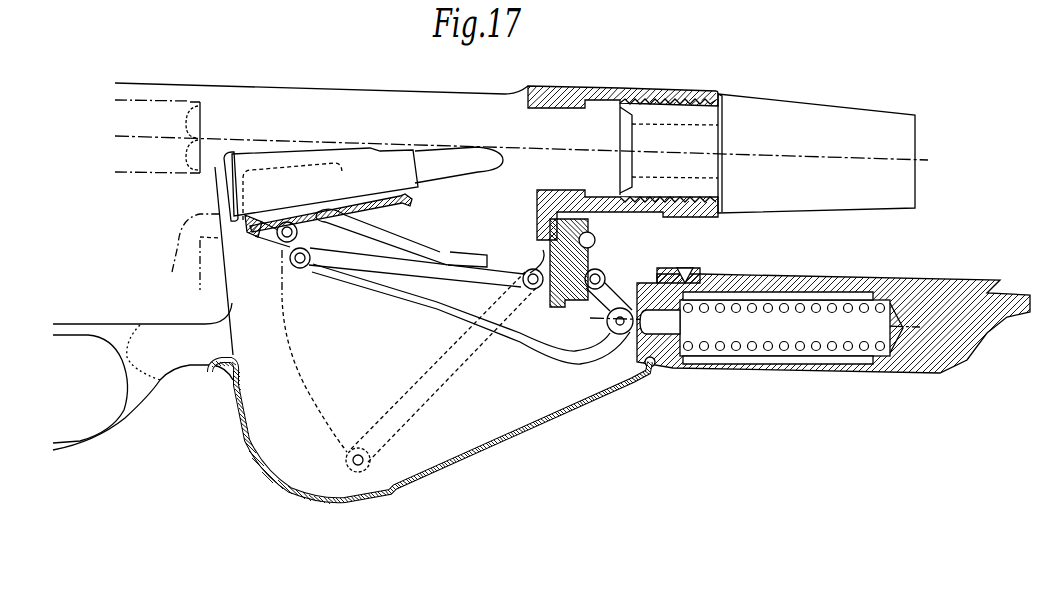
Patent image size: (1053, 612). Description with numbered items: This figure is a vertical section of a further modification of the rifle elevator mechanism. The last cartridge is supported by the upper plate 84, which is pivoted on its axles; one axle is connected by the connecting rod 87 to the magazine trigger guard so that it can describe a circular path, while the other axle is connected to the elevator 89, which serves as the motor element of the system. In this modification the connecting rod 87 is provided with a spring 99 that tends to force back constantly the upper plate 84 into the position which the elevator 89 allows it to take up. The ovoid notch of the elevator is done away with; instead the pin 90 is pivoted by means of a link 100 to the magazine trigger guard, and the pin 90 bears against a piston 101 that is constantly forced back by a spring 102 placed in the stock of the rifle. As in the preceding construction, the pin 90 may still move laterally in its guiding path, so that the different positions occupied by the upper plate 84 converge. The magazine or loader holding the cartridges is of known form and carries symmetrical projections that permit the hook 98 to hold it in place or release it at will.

The plate 84 is at (356, 202).
The connecting rod 87 is at (448, 265).
The elevator 89 is at (408, 300).
The pin 90 is at (618, 328).
The hook 98 is at (205, 233).
The spring 99 is at (407, 240).
The link 100 is at (605, 297).
The piston 101 is at (683, 276).
The spring 102 is at (772, 282).